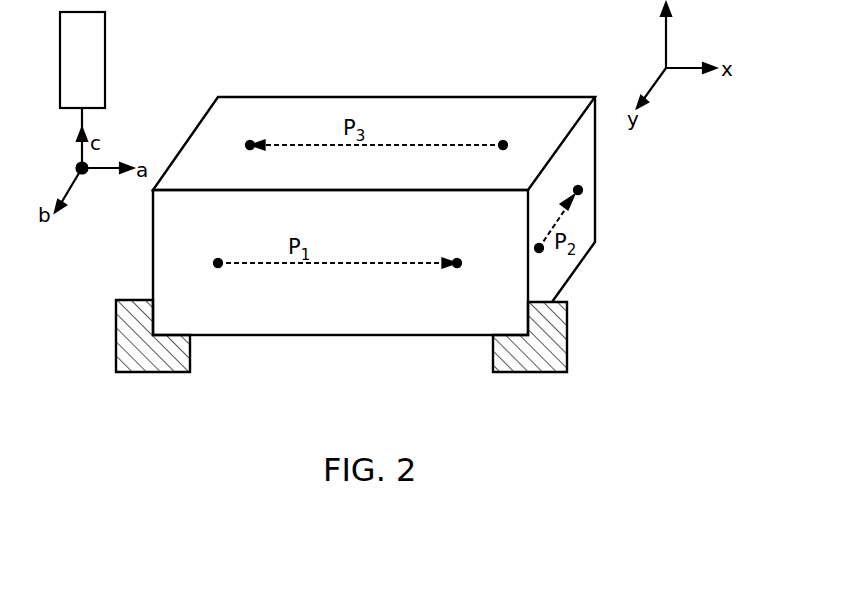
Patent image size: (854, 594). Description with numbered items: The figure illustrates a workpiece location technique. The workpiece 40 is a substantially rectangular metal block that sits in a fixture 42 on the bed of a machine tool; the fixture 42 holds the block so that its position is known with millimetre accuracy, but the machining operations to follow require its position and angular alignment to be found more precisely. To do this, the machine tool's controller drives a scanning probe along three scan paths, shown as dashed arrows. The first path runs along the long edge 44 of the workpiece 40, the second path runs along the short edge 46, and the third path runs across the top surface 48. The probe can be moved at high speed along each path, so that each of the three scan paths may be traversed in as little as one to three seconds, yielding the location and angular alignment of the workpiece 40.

The workpiece 40 is at (604, 90).
The fixture 42 is at (135, 374).
The long edge 44 is at (419, 322).
The short edge 46 is at (588, 225).
The top surface 48 is at (447, 115).